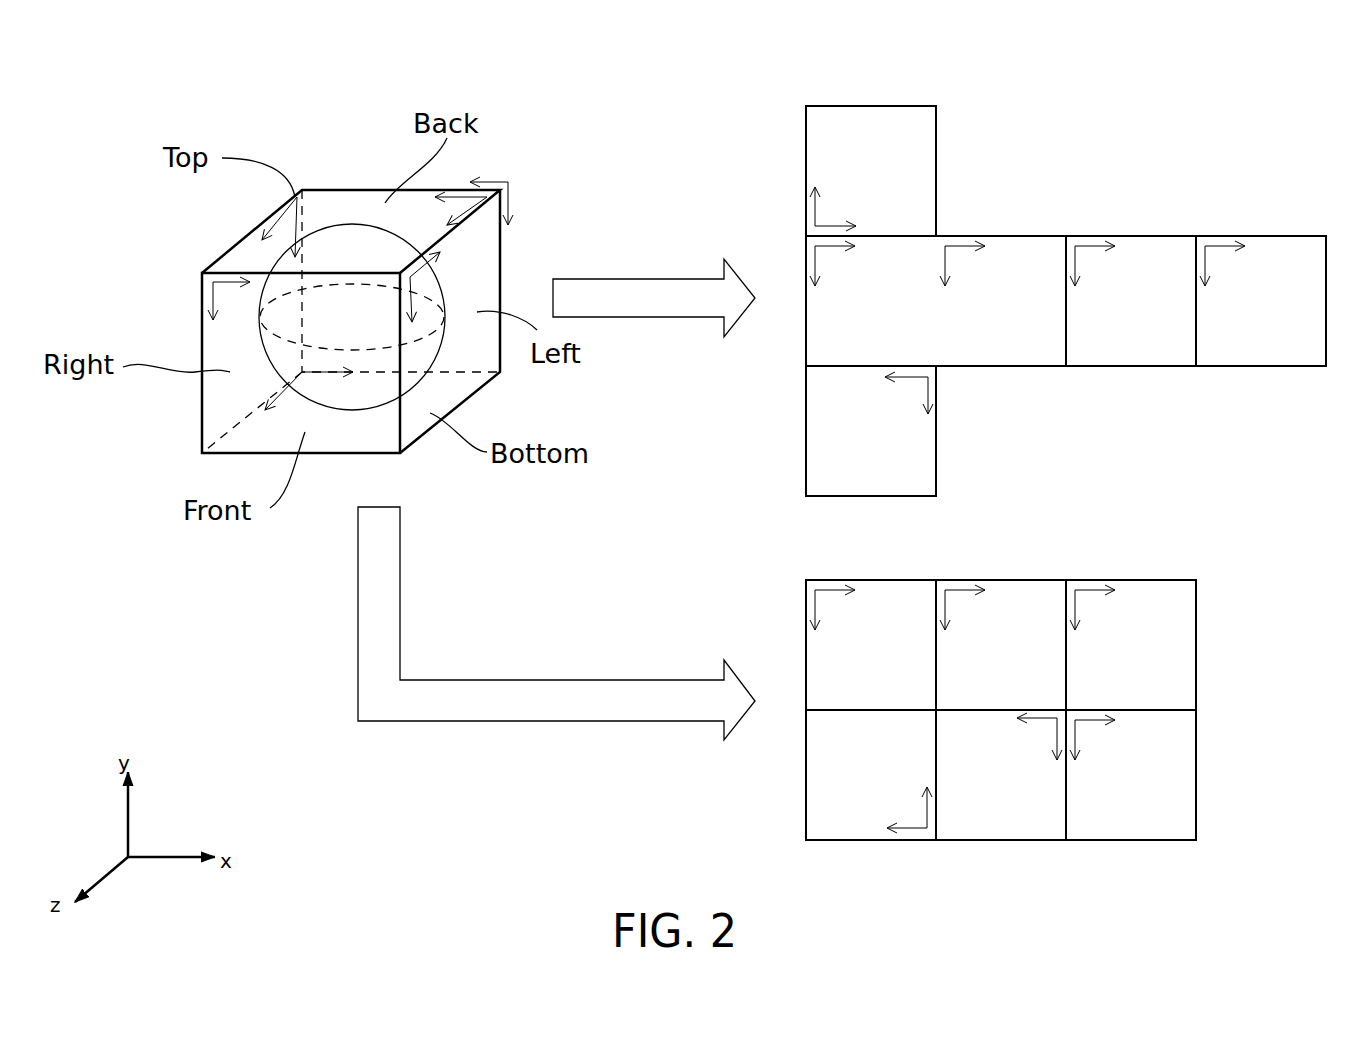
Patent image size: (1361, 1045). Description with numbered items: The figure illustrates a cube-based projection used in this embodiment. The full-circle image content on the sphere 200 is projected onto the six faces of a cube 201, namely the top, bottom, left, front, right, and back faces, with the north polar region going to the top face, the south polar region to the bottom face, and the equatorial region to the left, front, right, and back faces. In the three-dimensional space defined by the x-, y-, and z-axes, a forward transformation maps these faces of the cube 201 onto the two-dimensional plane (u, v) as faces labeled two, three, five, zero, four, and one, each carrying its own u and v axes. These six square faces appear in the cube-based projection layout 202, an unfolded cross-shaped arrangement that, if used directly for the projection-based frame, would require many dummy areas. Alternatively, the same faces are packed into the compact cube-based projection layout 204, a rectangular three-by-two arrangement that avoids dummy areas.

The sphere 200 is at (353, 223).
The cube 201 is at (397, 457).
The cube-based projection layout 202 is at (1192, 122).
The compact cube-based projection layout 204 is at (1218, 635).